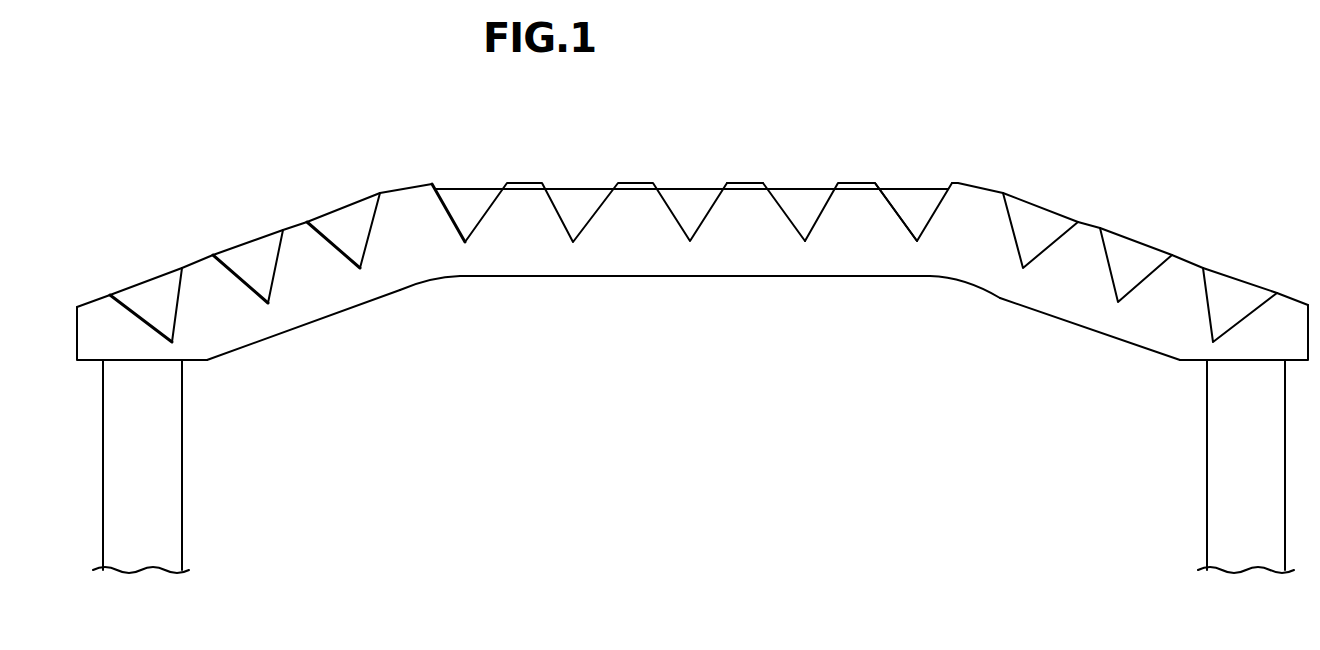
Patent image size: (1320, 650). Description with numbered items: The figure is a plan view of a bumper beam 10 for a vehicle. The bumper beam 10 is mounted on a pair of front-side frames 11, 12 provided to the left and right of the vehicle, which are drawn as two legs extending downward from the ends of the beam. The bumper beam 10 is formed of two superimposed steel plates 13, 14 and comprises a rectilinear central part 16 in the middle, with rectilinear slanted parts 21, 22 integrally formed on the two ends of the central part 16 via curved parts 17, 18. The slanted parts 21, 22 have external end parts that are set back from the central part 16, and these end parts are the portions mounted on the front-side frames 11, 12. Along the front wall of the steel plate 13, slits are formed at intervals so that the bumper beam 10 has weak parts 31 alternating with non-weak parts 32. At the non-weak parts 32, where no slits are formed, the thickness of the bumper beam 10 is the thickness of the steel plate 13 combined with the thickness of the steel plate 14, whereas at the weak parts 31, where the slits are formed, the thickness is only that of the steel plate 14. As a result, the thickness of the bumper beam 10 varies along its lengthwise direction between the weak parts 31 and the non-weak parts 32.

The bumper beam 10 is at (400, 189).
The front-side frame 11 is at (167, 503).
The front-side frame 12 is at (1215, 503).
The steel plate 13 is at (857, 195).
The steel plate 14 is at (917, 198).
The central part 16 is at (688, 262).
The curved part 17 is at (423, 265).
The curved part 18 is at (953, 268).
The slanted part 21 is at (277, 320).
The slanted part 22 is at (1082, 307).
The weak part 31 is at (247, 243).
The non-weak part 32 is at (193, 263).